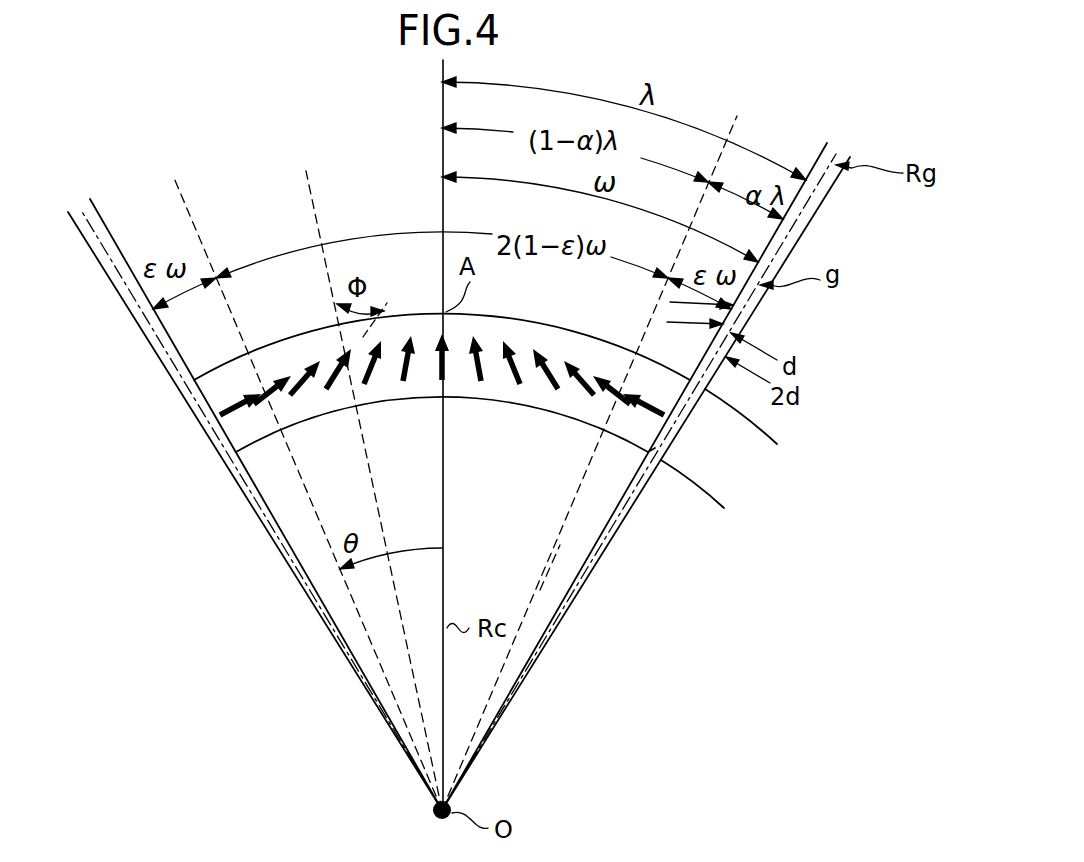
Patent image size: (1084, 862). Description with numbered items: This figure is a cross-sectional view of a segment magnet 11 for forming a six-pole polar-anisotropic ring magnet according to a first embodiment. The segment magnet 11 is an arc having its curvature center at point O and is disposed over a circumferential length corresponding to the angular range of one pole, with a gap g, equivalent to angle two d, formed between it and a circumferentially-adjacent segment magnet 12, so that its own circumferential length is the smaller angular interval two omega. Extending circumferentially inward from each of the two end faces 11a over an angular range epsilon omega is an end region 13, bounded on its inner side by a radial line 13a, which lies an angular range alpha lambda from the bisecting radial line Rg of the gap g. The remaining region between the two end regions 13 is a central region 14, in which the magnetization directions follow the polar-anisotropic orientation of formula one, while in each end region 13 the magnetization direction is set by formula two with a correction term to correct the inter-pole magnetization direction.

The segment magnet 11 is at (491, 402).
The end face 11a is at (657, 443).
The circumferentially-adjacent segment magnet 12 is at (697, 484).
The end region 13 is at (657, 373).
The radial line 13a is at (540, 590).
The central region 14 is at (544, 333).